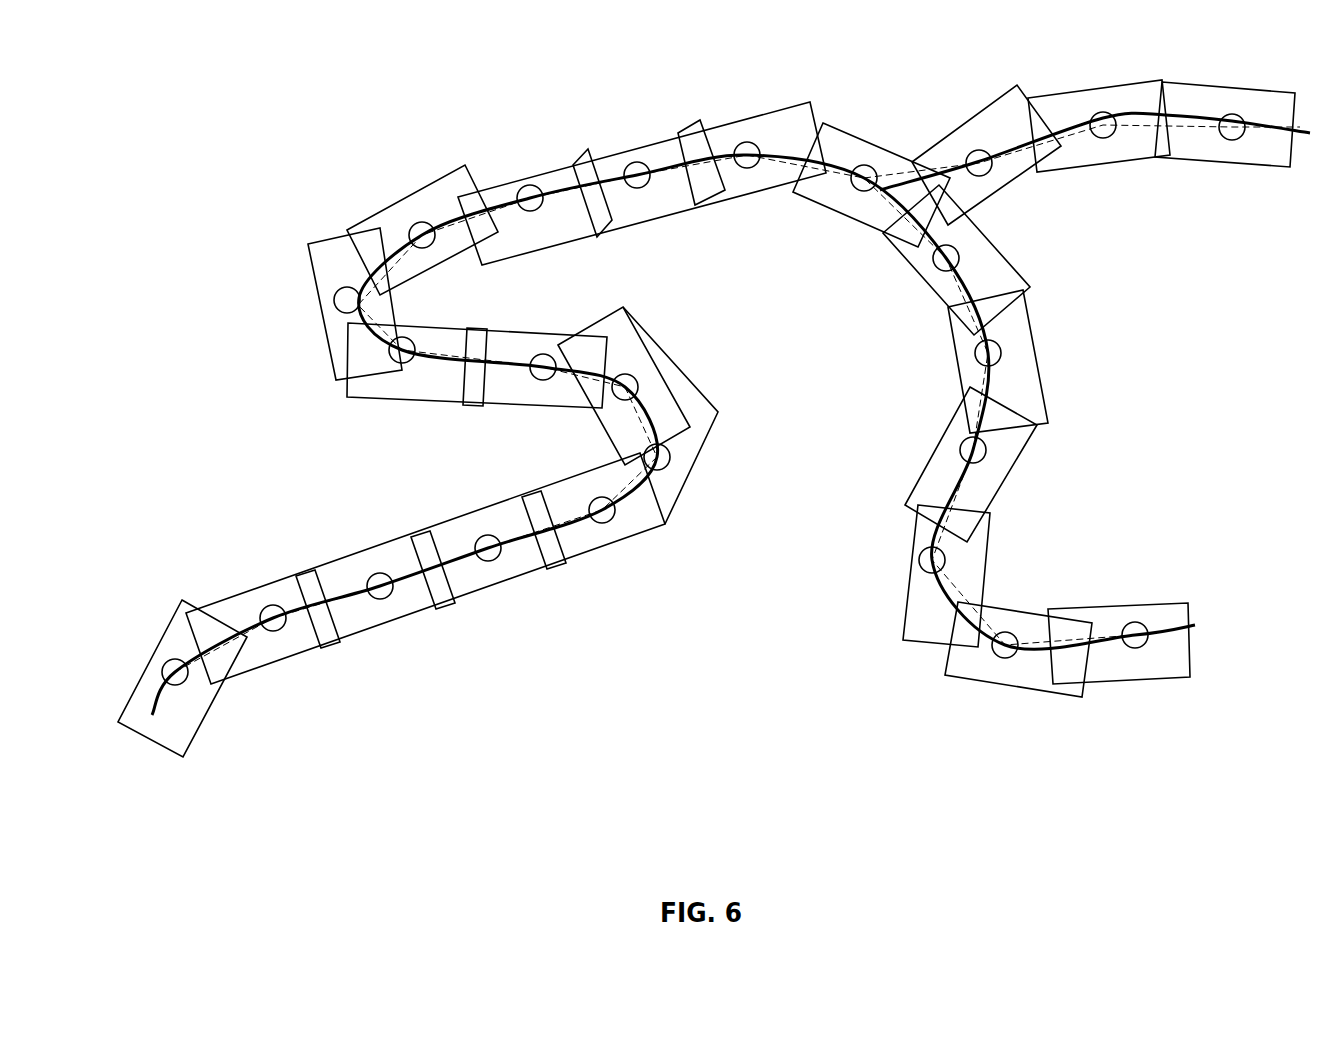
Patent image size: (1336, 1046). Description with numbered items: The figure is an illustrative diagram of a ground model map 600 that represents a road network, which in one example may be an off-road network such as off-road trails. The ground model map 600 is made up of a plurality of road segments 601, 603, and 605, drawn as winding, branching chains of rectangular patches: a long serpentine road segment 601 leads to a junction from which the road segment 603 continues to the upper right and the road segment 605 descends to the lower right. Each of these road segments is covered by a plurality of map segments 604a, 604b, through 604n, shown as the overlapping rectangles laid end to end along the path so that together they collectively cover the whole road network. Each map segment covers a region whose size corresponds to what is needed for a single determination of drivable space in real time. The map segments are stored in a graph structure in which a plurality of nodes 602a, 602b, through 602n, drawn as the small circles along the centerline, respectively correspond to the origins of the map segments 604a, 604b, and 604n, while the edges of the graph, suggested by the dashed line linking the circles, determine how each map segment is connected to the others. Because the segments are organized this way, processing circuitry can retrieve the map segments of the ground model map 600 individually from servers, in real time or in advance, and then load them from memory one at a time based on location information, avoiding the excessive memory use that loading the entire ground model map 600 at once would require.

The ground model map 600 is at (236, 112).
The road segment 601 is at (286, 565).
The node 602a is at (170, 661).
The node 602b is at (270, 608).
The node 602n is at (1140, 627).
The road segment 603 is at (1234, 38).
The map segment 604a is at (185, 728).
The map segment 604b is at (263, 648).
The map segment 604n is at (1145, 682).
The road segment 605 is at (1054, 497).